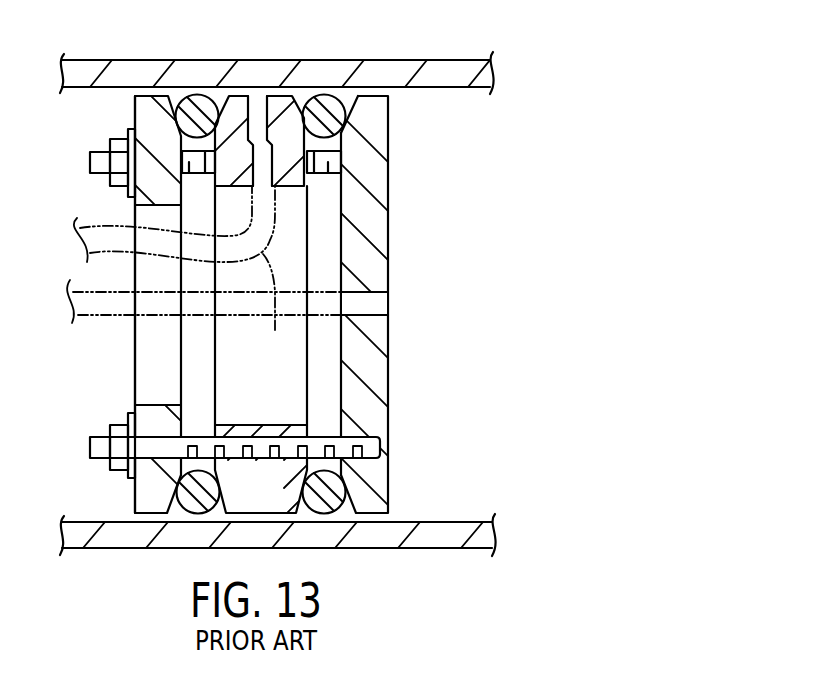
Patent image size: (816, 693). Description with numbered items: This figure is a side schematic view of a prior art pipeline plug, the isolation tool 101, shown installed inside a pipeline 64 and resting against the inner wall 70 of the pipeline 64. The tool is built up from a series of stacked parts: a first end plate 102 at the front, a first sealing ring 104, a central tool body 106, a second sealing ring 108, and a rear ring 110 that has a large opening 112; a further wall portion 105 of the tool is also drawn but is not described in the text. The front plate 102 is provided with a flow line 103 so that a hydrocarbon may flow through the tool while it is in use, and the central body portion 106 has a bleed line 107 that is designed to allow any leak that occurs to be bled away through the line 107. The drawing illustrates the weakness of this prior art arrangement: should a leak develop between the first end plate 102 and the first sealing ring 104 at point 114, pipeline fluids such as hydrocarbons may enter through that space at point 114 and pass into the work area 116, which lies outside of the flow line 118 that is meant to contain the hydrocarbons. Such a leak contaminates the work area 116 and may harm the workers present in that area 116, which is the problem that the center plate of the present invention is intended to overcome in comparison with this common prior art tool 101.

The pipeline 64 is at (442, 60).
The inner wall of the pipeline 70 is at (448, 88).
The isolation tool 101 is at (270, 283).
The first end plate 102 is at (390, 407).
The flow line 103 is at (378, 307).
The first sealing ring 104 is at (347, 118).
The side wall of carriage 105 is at (389, 236).
The central tool body 106 is at (243, 93).
The bleed line 107 is at (263, 93).
The second sealing ring 108 is at (194, 107).
The rear ring 110 is at (137, 113).
The large opening 112 is at (142, 339).
The leak point 114 is at (345, 97).
The work area 116 is at (93, 203).
The flow line 118 is at (237, 357).